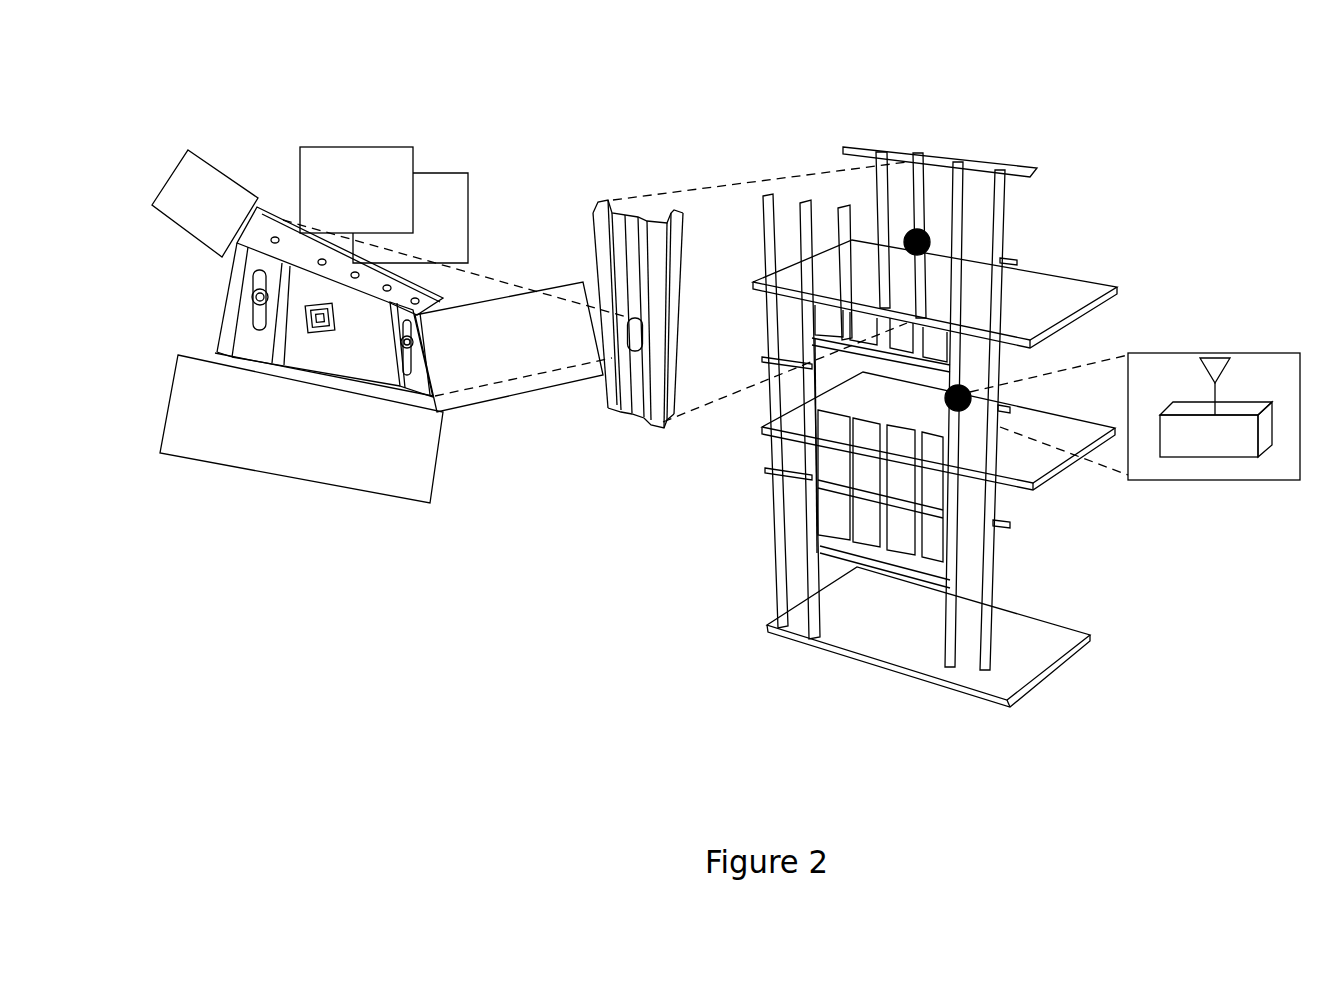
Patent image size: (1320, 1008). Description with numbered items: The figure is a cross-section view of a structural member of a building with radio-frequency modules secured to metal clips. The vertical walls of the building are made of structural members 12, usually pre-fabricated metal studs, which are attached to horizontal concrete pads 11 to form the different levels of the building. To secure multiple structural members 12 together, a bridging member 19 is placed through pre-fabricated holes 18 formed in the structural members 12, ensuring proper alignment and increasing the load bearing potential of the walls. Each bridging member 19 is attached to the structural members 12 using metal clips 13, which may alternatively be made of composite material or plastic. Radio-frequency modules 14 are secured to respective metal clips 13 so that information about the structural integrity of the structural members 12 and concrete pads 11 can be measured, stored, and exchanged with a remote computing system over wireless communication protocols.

The concrete pad 11 is at (1057, 310).
The structural member 12 is at (593, 240).
The metal clip 13 is at (343, 376).
The radio-frequency module 14 is at (333, 313).
The pre-fabricated hole 18 is at (633, 352).
The bridging member 19 is at (1023, 258).